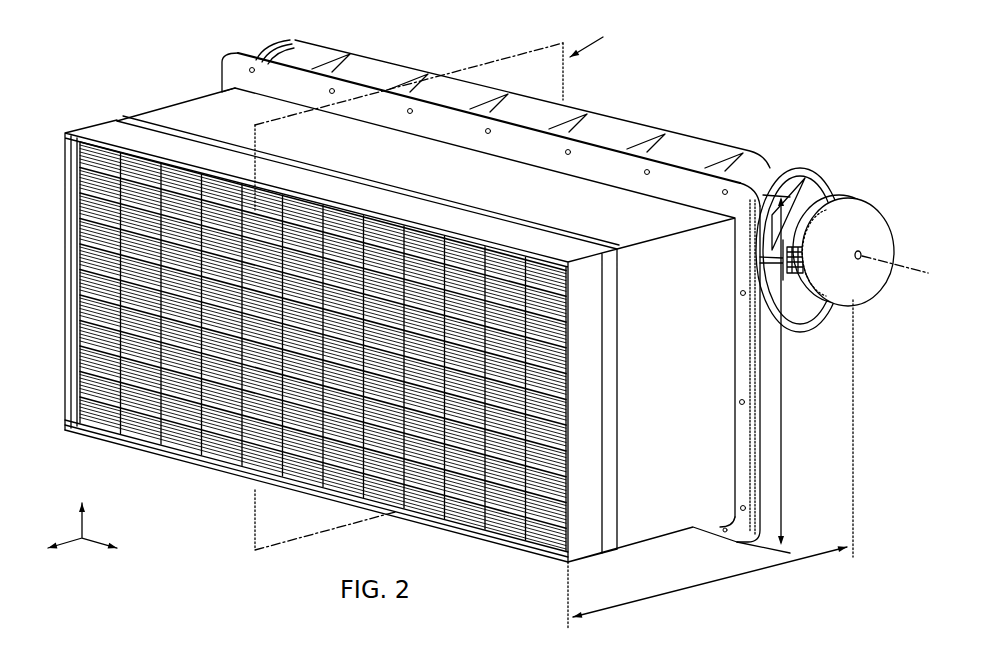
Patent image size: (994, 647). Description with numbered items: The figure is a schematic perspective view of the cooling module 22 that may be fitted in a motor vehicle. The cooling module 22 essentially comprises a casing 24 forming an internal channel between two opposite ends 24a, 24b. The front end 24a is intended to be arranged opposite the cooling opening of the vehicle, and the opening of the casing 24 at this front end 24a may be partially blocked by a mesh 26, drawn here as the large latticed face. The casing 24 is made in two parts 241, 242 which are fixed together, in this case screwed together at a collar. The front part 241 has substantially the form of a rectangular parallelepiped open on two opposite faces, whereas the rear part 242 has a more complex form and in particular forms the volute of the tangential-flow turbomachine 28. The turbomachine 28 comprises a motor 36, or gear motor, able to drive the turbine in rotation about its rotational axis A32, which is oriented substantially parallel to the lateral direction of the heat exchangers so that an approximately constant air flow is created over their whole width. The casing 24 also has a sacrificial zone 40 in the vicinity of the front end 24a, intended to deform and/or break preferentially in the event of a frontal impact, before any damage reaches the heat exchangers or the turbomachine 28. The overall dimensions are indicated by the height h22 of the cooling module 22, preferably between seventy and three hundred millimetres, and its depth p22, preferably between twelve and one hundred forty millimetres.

The cooling module 22 is at (188, 65).
The casing 24 is at (182, 107).
The front part 241 is at (148, 118).
The rear part 242 is at (338, 47).
The front end 24a is at (218, 478).
The rear end 24b is at (845, 178).
The mesh 26 is at (512, 525).
The tangential-flow turbomachine 28 is at (893, 292).
The motor 36 is at (872, 222).
The sacrificial zone 40 is at (115, 127).
The height of the cooling module h22 is at (782, 404).
The depth of the cooling module p22 is at (710, 464).
The rotational axis of the turbine A32 is at (913, 263).